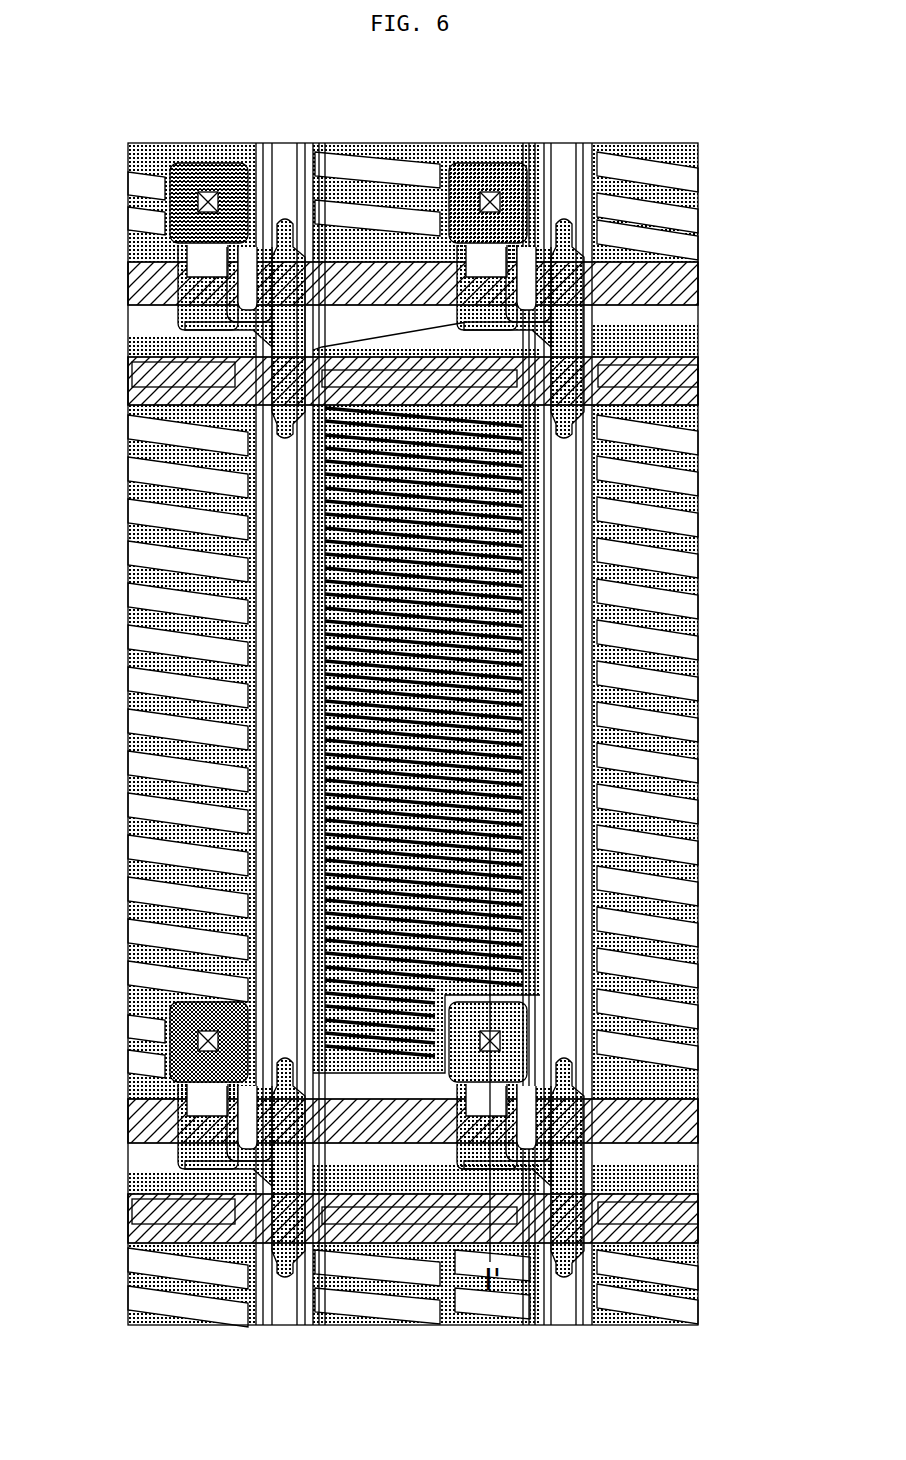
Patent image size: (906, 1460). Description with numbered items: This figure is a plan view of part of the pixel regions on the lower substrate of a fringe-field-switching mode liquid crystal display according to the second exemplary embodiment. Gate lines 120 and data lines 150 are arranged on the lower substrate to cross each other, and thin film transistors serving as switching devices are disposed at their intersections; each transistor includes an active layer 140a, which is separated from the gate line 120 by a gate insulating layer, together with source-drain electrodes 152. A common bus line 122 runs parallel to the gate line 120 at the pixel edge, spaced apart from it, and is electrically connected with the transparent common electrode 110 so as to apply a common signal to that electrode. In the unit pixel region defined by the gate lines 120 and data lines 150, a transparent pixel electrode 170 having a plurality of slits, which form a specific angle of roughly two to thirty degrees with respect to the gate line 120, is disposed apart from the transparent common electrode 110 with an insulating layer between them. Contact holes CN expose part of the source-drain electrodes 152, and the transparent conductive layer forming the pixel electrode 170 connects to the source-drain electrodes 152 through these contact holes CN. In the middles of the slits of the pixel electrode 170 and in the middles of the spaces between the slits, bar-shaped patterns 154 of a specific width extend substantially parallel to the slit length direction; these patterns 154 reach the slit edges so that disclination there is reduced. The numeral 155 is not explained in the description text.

The transparent common electrode 110 is at (585, 790).
The gate line 120 is at (170, 318).
The common bus line 122 is at (150, 411).
The active layer 140a is at (556, 222).
The data line 150 is at (577, 180).
The source-drain electrode 152 is at (165, 1033).
The bar-shaped pattern 154 is at (505, 550).
The pixel electrode branch 155 is at (520, 908).
The transparent pixel electrode 170 is at (142, 673).
The contact hole CN is at (208, 1032).